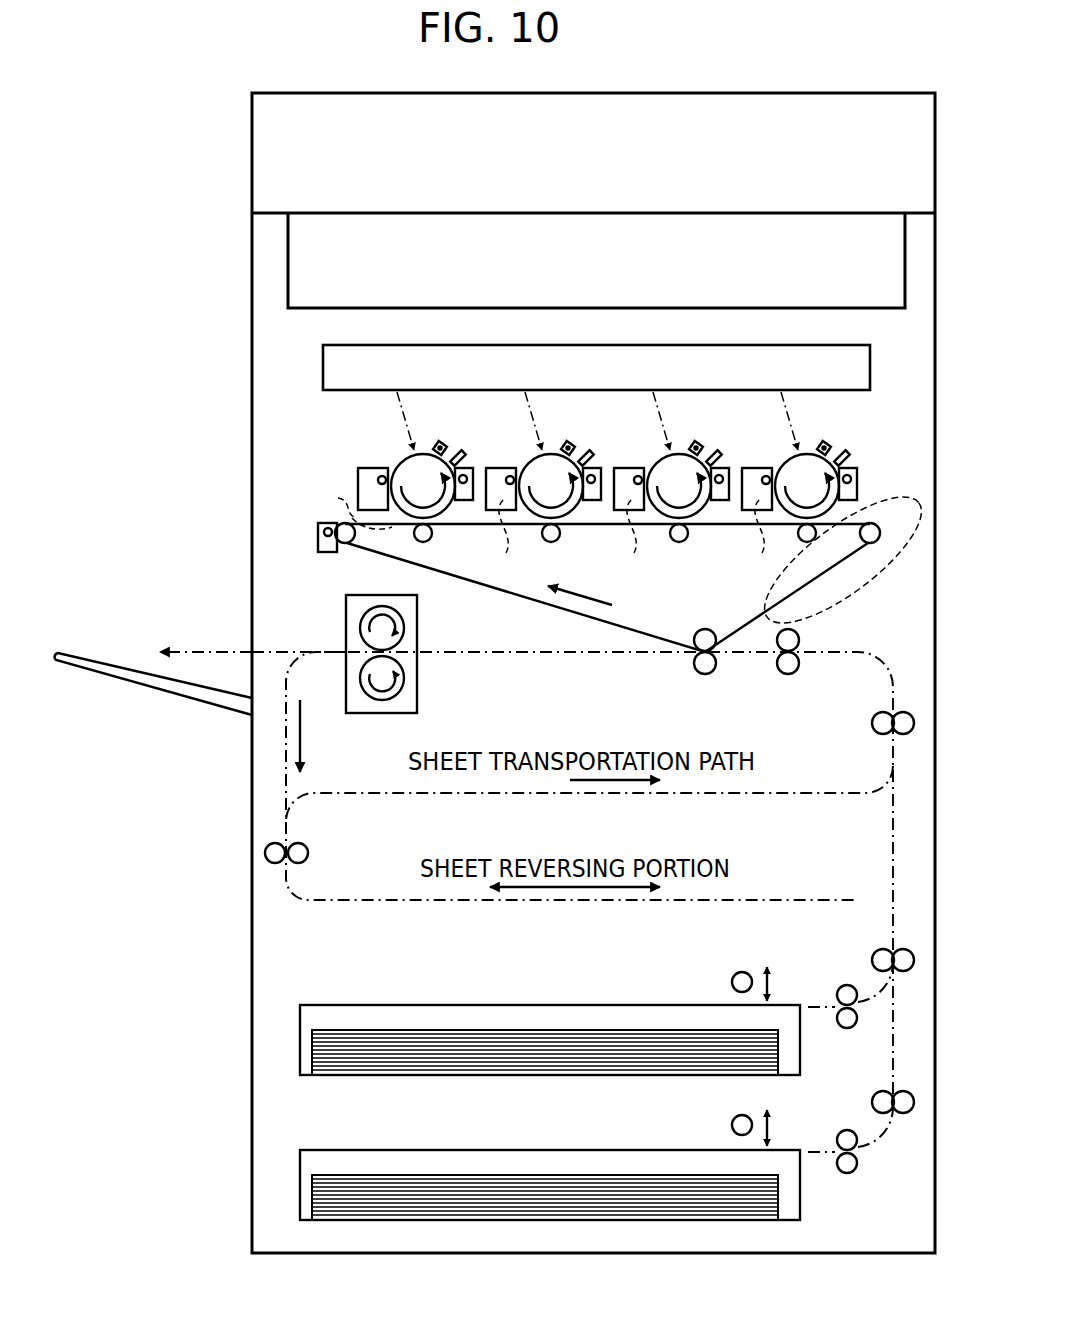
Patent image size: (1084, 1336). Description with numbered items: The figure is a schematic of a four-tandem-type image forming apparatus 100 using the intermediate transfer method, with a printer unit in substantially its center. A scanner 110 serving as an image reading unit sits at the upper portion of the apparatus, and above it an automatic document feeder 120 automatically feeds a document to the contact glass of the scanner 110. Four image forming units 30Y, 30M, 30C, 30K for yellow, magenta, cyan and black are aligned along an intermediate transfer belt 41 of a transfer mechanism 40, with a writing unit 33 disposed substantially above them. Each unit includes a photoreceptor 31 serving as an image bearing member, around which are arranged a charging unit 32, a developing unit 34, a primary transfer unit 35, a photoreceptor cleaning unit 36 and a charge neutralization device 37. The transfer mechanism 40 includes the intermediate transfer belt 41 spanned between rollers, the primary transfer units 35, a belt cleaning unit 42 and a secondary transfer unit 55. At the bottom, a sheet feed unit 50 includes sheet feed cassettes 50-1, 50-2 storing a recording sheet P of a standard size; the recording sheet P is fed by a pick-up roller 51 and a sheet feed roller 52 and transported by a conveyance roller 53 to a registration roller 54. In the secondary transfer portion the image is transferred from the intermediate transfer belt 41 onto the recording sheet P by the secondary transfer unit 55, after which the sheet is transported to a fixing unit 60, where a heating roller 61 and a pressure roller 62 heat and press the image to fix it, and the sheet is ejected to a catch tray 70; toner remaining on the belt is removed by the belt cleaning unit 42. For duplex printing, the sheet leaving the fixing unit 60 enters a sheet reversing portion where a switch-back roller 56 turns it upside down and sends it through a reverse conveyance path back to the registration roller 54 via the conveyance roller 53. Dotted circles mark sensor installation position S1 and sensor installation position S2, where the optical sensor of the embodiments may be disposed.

The image forming apparatus 100 is at (252, 514).
The automatic document feeder 120 is at (252, 178).
The scanner 110 is at (288, 263).
The writing unit 33 is at (870, 364).
The image forming unit for yellow 30Y is at (415, 477).
The image forming unit for magenta 30M is at (589, 438).
The image forming unit for cyan 30C is at (717, 438).
The image forming unit for black 30K is at (845, 438).
The photoreceptor 31 is at (405, 460).
The charging unit 32 is at (438, 443).
The charge neutralization device 37 is at (470, 460).
The developing unit 34 is at (358, 480).
The photoreceptor cleaning unit 36 is at (466, 502).
The sensor installation position S1 is at (543, 531).
The sensor installation position S2 is at (886, 578).
The transfer mechanism 40 is at (574, 581).
The intermediate transfer belt 41 is at (532, 603).
The belt cleaning unit 42 is at (318, 538).
The primary transfer unit 35 is at (424, 544).
The secondary transfer unit 55 is at (708, 676).
The registration roller 54 is at (790, 676).
The fixing unit 60 is at (386, 662).
The heating roller 61 is at (358, 628).
The pressure roller 62 is at (358, 672).
The catch tray 70 is at (166, 693).
The conveyance roller 53 is at (874, 727).
The switch-back roller 56 is at (308, 855).
The sheet feed unit 50 is at (544, 1087).
The sheet feed cassette 50-1 is at (460, 1005).
The sheet feed cassette 50-2 is at (460, 1150).
The recording sheet P is at (592, 1030).
The pick-up roller 51 is at (732, 980).
The sheet feed roller 52 is at (850, 1028).